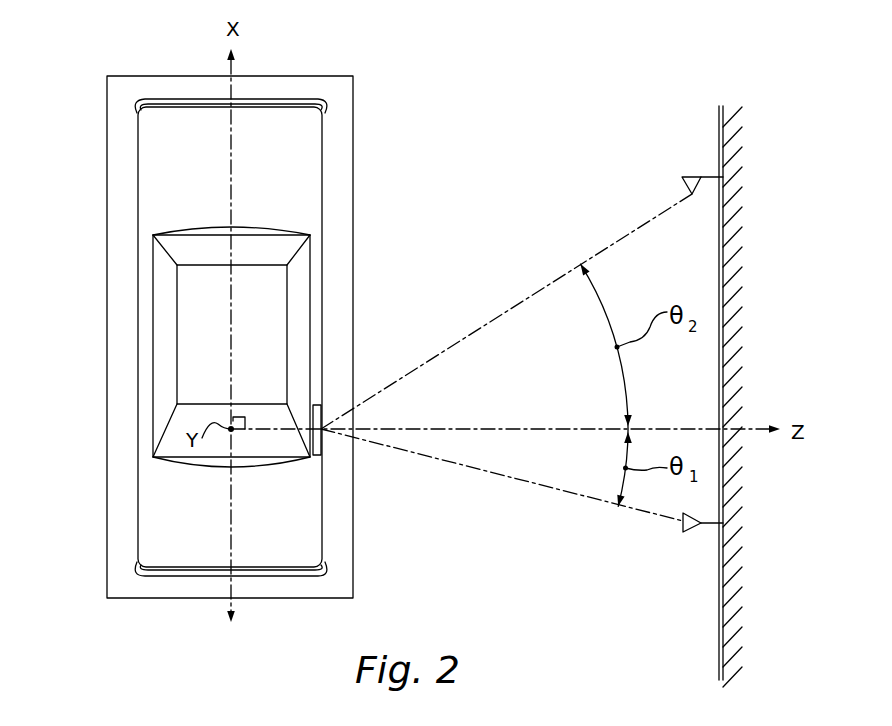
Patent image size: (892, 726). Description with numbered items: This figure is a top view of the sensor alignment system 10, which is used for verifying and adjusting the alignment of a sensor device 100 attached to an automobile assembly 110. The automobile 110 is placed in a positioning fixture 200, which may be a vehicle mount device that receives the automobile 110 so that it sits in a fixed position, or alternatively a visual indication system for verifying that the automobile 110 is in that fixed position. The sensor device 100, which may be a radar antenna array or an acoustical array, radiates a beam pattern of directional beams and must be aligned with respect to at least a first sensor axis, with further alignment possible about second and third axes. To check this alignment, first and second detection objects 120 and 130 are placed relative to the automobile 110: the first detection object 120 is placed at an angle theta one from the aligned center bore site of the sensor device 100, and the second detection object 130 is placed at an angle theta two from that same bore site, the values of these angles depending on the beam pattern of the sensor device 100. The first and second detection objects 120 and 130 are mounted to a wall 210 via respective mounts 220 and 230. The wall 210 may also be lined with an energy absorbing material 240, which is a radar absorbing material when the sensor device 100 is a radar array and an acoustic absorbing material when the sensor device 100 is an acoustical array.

The sensor alignment system 10 is at (108, 52).
The sensor device 100 is at (322, 445).
The automobile assembly 110 is at (322, 162).
The first detection object 120 is at (686, 531).
The second detection object 130 is at (682, 177).
The positioning fixture 200 is at (323, 76).
The wall 210 is at (728, 120).
The mount 220 is at (712, 525).
The mount 230 is at (708, 176).
The energy absorbing material 240 is at (719, 137).